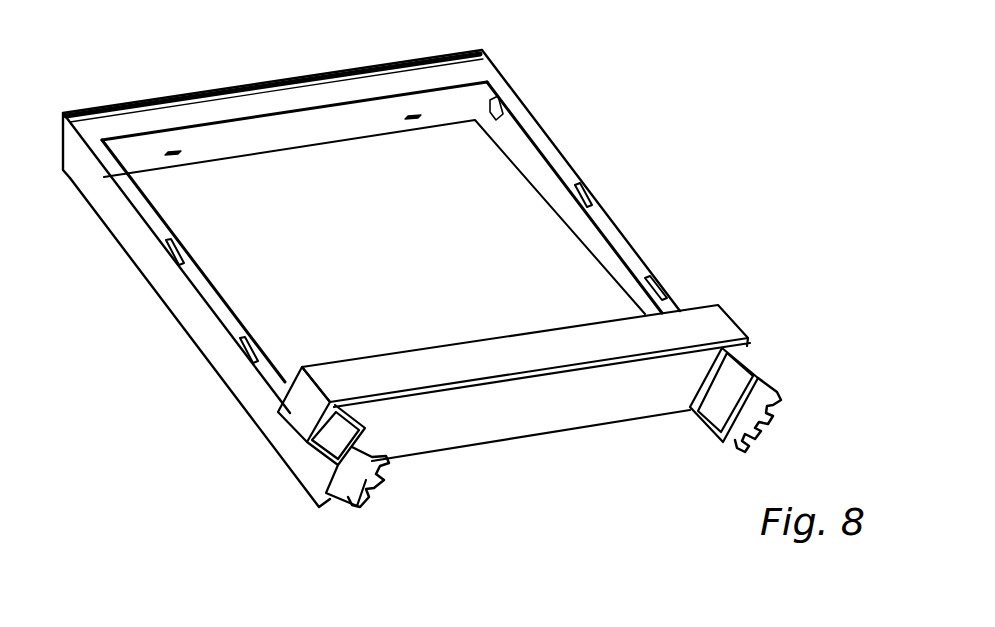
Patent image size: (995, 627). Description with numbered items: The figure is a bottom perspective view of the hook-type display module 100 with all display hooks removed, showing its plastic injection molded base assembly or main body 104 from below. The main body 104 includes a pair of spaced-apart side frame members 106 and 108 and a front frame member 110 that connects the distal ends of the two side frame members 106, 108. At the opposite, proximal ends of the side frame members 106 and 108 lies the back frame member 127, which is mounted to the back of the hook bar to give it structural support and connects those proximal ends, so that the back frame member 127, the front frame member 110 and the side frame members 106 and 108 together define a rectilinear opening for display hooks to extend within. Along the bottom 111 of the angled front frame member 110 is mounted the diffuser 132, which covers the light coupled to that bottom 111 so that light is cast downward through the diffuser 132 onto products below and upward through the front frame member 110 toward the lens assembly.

The hook-type display module 100 is at (627, 102).
The main body 104 is at (206, 375).
The side frame member 106 is at (592, 240).
The side frame member 108 is at (167, 283).
The front frame member 110 is at (277, 142).
The bottom of front frame member 111 is at (357, 105).
The back frame member 127 is at (545, 414).
The diffuser 132 is at (210, 112).